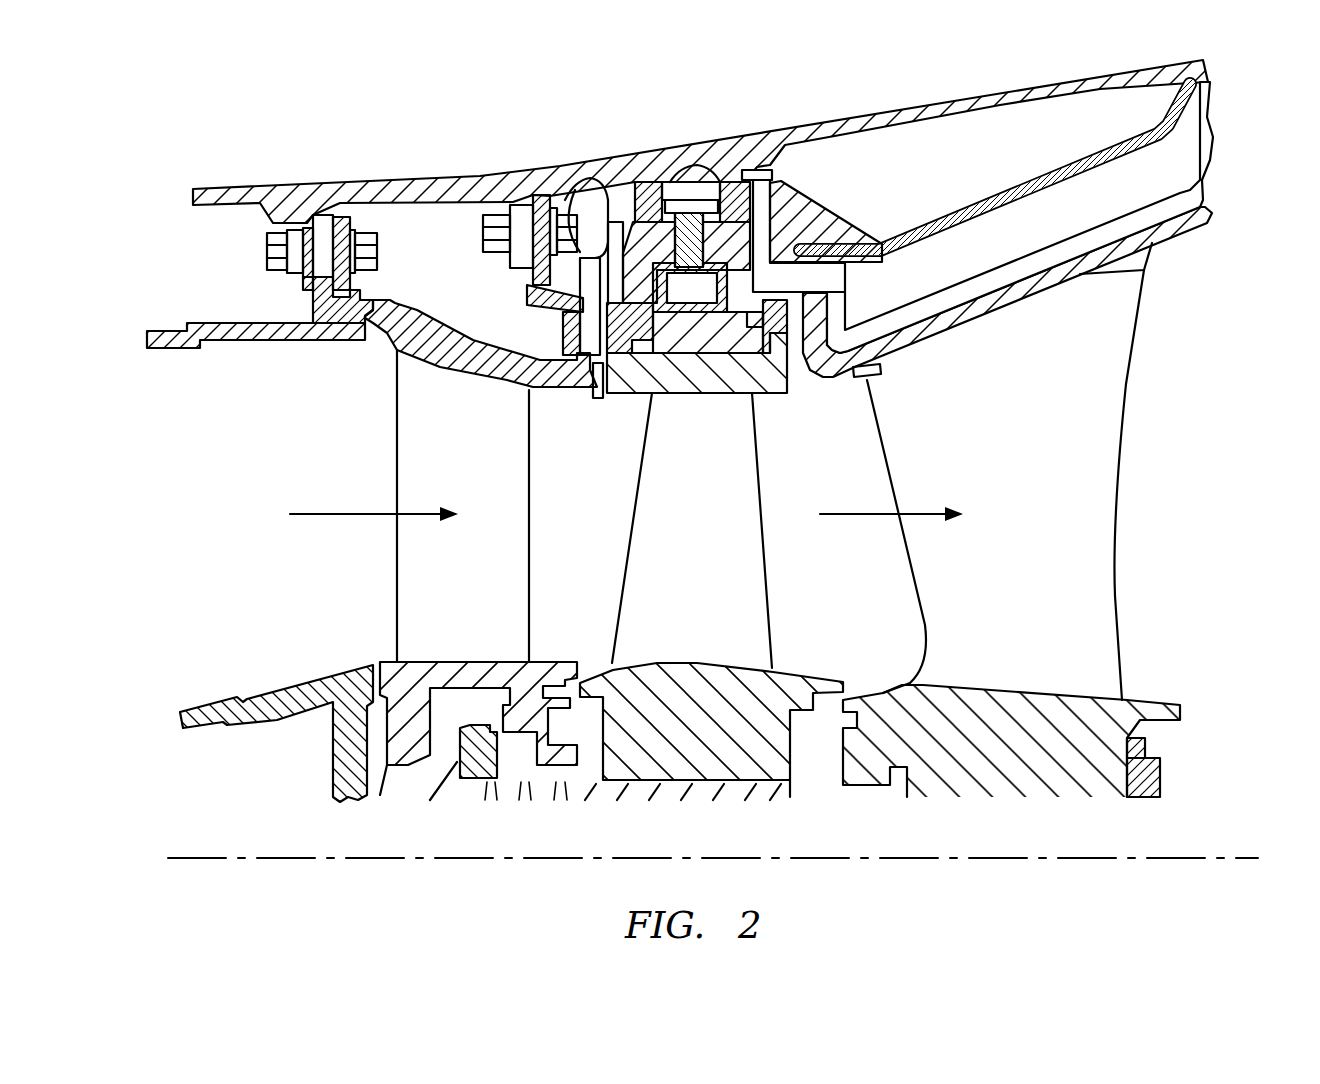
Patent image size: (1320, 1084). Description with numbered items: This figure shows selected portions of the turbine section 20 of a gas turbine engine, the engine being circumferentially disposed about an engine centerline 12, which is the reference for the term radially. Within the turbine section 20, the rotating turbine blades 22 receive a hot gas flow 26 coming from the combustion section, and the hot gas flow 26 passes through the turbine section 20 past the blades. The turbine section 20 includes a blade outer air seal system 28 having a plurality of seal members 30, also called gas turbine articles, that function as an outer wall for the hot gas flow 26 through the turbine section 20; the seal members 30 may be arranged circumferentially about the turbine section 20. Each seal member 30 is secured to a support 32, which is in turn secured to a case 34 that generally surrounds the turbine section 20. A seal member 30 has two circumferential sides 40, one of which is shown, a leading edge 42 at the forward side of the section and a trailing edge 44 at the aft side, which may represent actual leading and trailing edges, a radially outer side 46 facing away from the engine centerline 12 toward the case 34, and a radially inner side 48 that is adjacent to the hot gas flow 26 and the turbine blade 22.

The engine centerline 12 is at (1233, 858).
The turbine section 20 is at (560, 590).
The turbine blades 22 is at (623, 573).
The hot gas flow 26 is at (330, 520).
The blade outer air seal system 28 is at (780, 402).
The seal member 30 is at (628, 393).
The support 32 is at (605, 245).
The case 34 is at (708, 150).
The circumferential sides 40 is at (770, 377).
The leading edge 42 is at (578, 348).
The trailing edge 44 is at (840, 325).
The radially outer side 46 is at (770, 268).
The radially inner side 48 is at (697, 400).